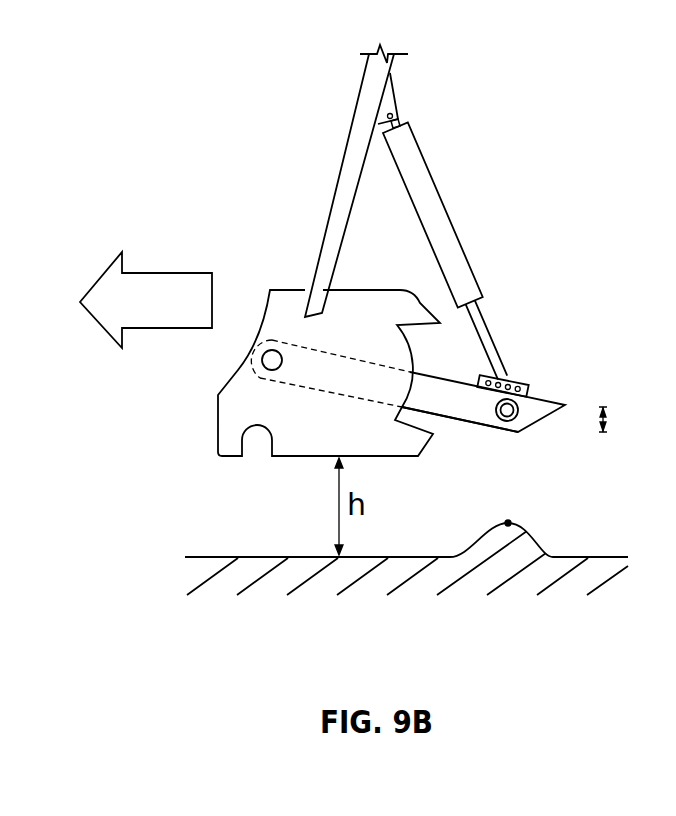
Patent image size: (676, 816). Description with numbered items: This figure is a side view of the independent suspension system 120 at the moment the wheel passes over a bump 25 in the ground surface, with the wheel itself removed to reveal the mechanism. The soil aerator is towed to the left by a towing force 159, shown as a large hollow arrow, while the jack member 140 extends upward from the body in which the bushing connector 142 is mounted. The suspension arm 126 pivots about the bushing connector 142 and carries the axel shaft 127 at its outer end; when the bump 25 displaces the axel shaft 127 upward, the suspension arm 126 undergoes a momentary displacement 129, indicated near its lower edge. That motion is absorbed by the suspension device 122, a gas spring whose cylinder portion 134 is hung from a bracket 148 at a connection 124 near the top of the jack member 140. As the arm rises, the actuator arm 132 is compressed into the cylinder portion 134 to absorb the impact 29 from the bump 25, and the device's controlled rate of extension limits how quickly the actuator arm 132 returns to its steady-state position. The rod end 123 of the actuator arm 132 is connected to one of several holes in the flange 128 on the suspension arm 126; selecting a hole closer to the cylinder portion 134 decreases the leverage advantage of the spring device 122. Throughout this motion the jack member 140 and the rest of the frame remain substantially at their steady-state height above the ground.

The independent suspension system 120 is at (557, 229).
The suspension device 122 is at (478, 250).
The rod end 123 is at (507, 380).
The clevis pin connection 124 is at (399, 124).
The suspension arm 126 is at (545, 426).
The axel shaft 127 is at (508, 421).
The flange 128 is at (533, 387).
The momentary displacement 129 is at (440, 428).
The actuator arm 132 is at (485, 320).
The cylinder portion 134 is at (467, 280).
The jack member 140 is at (336, 147).
The bushing connector 142 is at (272, 358).
The mounting bracket 148 is at (395, 90).
The towing force 159 is at (183, 283).
The bump 25 is at (510, 542).
The impact 29 is at (613, 420).